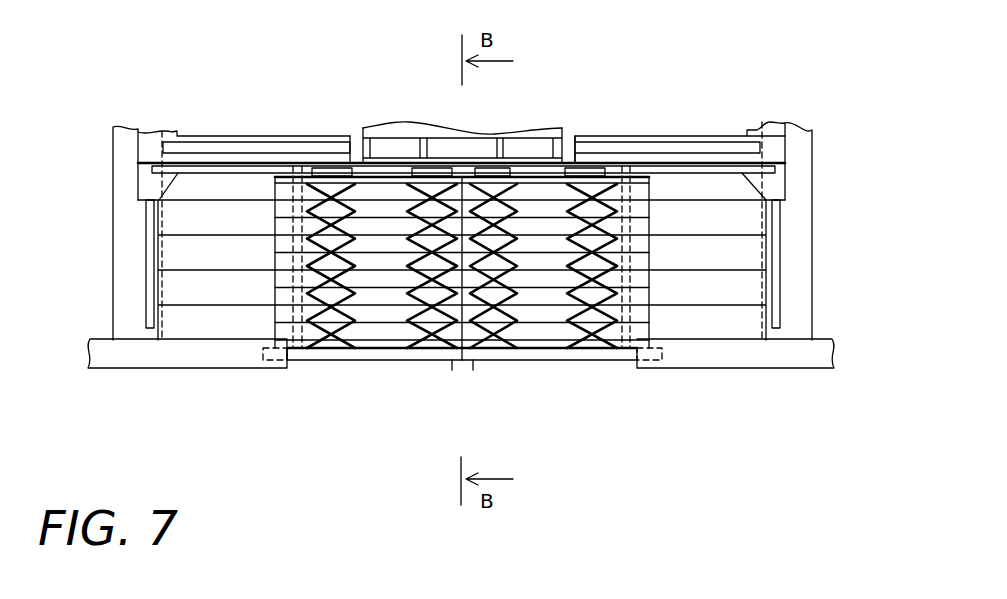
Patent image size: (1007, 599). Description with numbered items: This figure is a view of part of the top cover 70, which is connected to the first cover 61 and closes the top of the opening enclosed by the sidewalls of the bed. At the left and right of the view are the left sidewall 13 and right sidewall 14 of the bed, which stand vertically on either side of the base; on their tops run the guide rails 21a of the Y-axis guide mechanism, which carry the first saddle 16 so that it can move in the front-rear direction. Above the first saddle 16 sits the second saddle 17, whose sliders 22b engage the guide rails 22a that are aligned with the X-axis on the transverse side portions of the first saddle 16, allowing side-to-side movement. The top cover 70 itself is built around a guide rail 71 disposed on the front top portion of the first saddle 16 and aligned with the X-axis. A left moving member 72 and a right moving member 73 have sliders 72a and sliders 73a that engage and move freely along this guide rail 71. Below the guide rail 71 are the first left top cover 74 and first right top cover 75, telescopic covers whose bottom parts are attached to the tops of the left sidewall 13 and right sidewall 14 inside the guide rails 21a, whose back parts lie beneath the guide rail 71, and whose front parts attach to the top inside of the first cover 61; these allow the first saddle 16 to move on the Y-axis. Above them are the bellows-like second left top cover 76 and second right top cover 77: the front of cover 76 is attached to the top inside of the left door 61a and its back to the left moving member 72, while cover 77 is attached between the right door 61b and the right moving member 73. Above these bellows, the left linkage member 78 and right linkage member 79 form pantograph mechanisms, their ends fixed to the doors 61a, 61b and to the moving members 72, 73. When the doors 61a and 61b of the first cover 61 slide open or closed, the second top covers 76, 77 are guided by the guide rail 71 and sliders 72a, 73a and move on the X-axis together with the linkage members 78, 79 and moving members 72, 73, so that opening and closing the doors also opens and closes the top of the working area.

The left sidewall 13 is at (119, 193).
The right sidewall 14 is at (806, 197).
The first saddle 16 is at (244, 193).
The second saddle 17 is at (466, 87).
The guide rails 21a is at (465, 270).
The guide rails 22a is at (256, 101).
The sliders 22b is at (443, 110).
The first cover 61 is at (187, 383).
The left door 61a is at (276, 394).
The right door 61b is at (647, 395).
The top cover 70 is at (206, 401).
The guide rail 71 is at (717, 189).
The left moving member 72 is at (368, 126).
The sliders 72a is at (362, 97).
The right moving member 73 is at (555, 108).
The sliders 73a is at (551, 134).
The first left top cover 74 is at (112, 264).
The first right top cover 75 is at (811, 264).
The second left top cover 76 is at (374, 396).
The second right top cover 77 is at (549, 395).
The left linkage member 78 is at (382, 309).
The right linkage member 79 is at (543, 309).